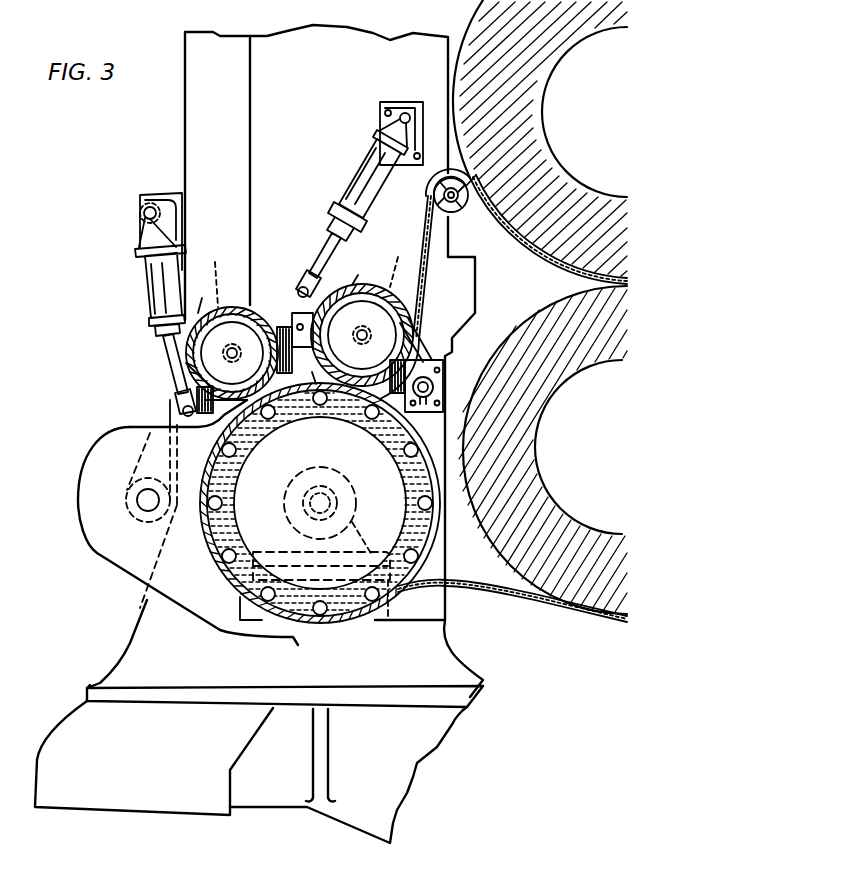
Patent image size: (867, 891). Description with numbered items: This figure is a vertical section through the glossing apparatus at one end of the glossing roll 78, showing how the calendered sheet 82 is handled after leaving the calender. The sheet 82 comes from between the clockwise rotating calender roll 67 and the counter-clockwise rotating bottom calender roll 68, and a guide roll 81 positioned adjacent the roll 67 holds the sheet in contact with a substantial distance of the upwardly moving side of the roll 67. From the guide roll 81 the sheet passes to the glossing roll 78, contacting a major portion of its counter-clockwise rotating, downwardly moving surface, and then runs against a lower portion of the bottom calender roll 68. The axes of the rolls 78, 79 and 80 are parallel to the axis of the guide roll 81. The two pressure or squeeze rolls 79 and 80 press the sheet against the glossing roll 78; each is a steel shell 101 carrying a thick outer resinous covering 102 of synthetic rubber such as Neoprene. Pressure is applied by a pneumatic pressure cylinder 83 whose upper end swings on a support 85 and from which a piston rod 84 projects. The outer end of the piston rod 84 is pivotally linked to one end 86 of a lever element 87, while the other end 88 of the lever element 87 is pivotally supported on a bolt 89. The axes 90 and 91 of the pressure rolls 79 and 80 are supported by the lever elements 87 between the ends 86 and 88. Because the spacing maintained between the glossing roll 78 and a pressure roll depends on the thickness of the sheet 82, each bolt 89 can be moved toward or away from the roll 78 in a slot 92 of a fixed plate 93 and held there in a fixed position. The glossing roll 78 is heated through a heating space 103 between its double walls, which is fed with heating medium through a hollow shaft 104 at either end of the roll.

The calender roll 67 is at (480, 38).
The bottom calender roll 68 is at (502, 545).
The glossing roll 78 is at (230, 569).
The pressure roll 79 is at (373, 286).
The pressure roll 80 is at (226, 307).
The guide roll 81 is at (449, 213).
The calendered sheet 82 is at (421, 285).
The pneumatic pressure cylinder 83 is at (152, 268).
The piston rod 84 is at (172, 398).
The support 85 is at (161, 196).
The end of lever element 86 is at (298, 302).
The lever element 87 is at (176, 367).
The end of lever element 88 is at (443, 373).
The bolt 89 is at (296, 322).
The axis of pressure roll 90 is at (370, 337).
The axis of pressure roll 91 is at (192, 368).
The slot 92 is at (312, 367).
The fixed plate 93 is at (447, 408).
The steel shell 101 is at (313, 274).
The resinous covering 102 is at (277, 284).
The heating space 103 is at (242, 595).
The hollow shaft 104 is at (302, 501).